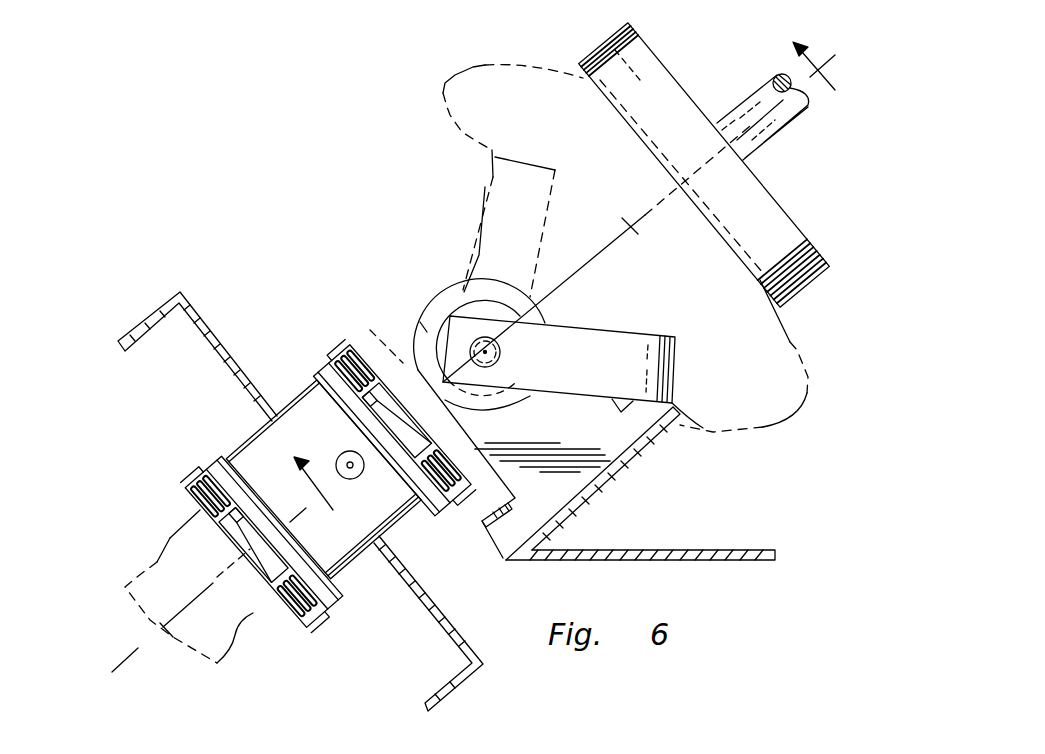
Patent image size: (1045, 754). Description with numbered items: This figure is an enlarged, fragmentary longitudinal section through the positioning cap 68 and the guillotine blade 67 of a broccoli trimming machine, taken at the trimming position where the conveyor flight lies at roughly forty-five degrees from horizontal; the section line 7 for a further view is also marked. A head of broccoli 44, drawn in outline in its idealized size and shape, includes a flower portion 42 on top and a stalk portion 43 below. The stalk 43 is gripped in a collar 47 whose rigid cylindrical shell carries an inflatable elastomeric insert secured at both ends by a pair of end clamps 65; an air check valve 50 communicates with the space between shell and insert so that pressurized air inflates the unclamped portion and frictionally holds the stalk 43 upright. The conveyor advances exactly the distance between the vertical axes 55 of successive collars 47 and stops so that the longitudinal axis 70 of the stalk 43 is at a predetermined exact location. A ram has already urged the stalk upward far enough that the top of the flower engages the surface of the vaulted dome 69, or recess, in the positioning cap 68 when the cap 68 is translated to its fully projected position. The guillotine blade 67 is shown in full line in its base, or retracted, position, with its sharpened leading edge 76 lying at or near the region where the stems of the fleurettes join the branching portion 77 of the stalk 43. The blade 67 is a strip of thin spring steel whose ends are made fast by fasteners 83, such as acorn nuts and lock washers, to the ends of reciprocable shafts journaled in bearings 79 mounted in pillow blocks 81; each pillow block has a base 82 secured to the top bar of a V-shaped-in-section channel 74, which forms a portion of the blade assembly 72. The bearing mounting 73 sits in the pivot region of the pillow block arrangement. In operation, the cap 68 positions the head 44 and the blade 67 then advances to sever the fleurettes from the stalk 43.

The section line 7- 7 is at (556, 265).
The flower portion 42 is at (805, 403).
The stalk portion 43 is at (365, 328).
The head of broccoli 44 is at (797, 338).
The collar 47 is at (250, 436).
The air check valve 50 is at (352, 479).
The vertical axis 55 is at (140, 645).
The end clamp 65 is at (335, 352).
The guillotine blade 67 is at (485, 187).
The positioning cap 68 is at (820, 242).
The vaulted dome 69 is at (712, 227).
The longitudinal axis 70 is at (627, 233).
The blade assembly 72 is at (640, 577).
The pivot bushing 73 is at (485, 353).
The V-shaped-in-section channel 74 is at (625, 456).
The sharpened leading edge 76 is at (680, 337).
The branching portion 77 is at (600, 309).
The bearing 79 is at (463, 297).
The pillow block 81 is at (578, 432).
The base 82 is at (500, 540).
The fastener 83 is at (500, 352).